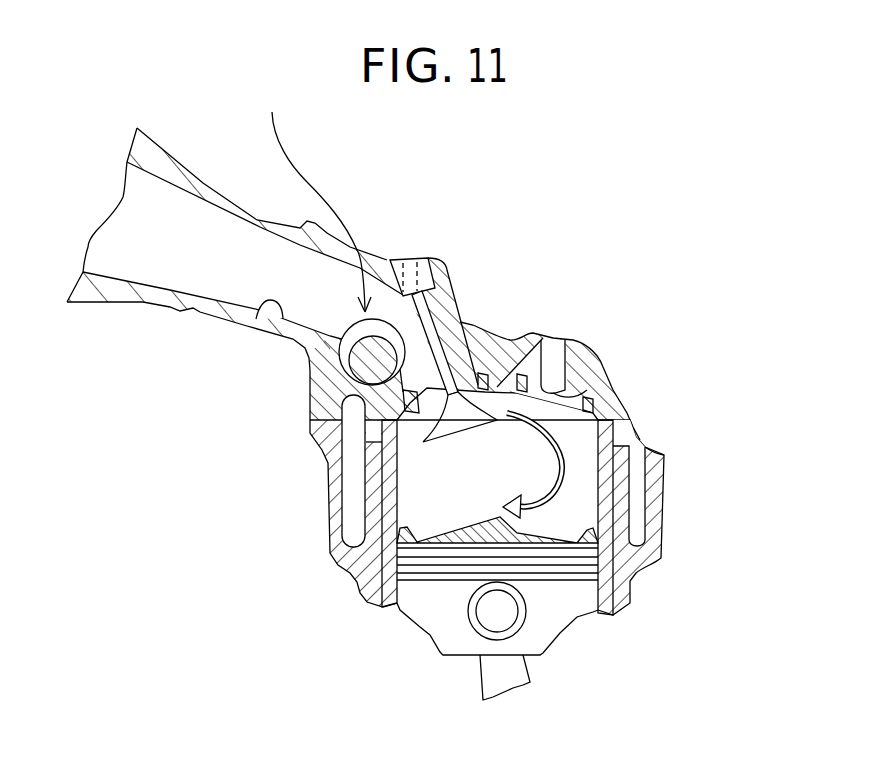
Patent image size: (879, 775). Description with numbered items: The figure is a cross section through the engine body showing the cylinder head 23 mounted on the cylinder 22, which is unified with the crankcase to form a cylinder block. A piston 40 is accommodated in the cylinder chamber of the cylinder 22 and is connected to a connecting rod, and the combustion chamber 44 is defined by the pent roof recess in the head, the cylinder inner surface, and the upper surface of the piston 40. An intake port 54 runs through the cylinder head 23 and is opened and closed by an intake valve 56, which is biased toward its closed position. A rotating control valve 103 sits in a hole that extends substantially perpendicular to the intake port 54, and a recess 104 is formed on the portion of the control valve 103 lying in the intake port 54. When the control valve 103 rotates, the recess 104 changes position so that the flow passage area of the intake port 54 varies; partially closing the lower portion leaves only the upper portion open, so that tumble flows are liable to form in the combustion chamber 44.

The cylinder 22 is at (664, 524).
The cylinder head 23 is at (197, 313).
The piston 40 is at (547, 620).
The combustion chamber 44 is at (433, 488).
The intake port 54 is at (256, 319).
The intake valve 56 is at (466, 340).
The control valve 103 is at (311, 192).
The recess 104 is at (308, 355).